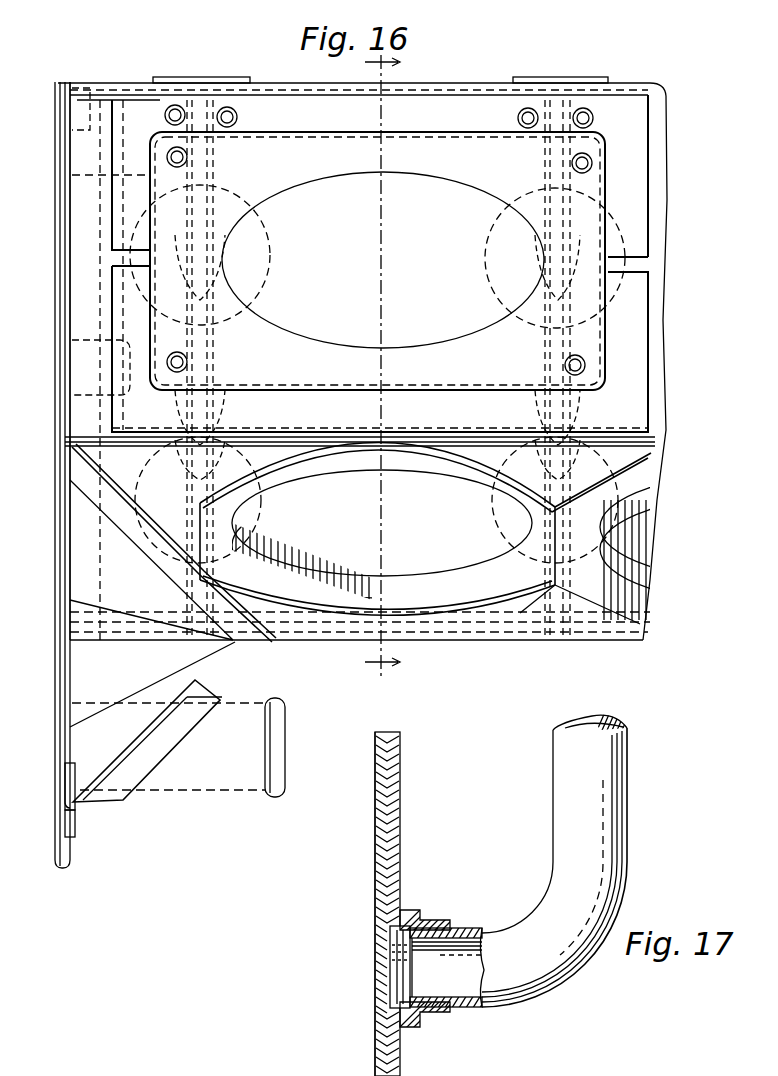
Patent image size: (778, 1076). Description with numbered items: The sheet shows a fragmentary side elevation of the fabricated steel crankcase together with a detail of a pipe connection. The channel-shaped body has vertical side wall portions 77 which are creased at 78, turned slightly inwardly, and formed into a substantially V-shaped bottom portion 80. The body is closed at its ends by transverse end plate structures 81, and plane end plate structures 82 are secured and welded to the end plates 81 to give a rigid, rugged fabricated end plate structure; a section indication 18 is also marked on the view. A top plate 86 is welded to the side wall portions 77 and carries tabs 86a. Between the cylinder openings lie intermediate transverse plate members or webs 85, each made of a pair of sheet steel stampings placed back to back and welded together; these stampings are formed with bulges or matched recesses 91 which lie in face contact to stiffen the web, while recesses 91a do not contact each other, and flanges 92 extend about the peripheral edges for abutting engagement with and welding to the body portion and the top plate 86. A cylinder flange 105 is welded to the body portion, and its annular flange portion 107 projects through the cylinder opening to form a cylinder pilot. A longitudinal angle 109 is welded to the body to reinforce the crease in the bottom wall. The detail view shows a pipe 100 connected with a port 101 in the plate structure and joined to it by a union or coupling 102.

In FIG. 16, the section line 18 is at (367, 369).
In FIG. 16, the vertical side wall portion 77 is at (658, 373).
In FIG. 16, the crease 78 is at (658, 440).
In FIG. 16, the V-shaped bottom portion 80 is at (590, 642).
In FIG. 16, the transverse end plate structure 81 is at (55, 553).
In FIG. 17, the transverse end plate structure 81 is at (400, 852).
In FIG. 16, the plane end plate structure 82 is at (50, 393).
In FIG. 17, the plane end plate structure 82 is at (365, 855).
In FIG. 16, the intermediate transverse plate member 85 is at (575, 200).
In FIG. 16, the top plate 86 is at (637, 83).
In FIG. 16, the mounting tab 86a is at (200, 77).
In FIG. 16, the bulge or matched recess 91 is at (553, 352).
In FIG. 16, the recess 91a is at (185, 145).
In FIG. 16, the flange 92 is at (250, 158).
In FIG. 16, the pipe 100 is at (72, 347).
In FIG. 17, the pipe 100 is at (605, 805).
In FIG. 17, the port 101 is at (376, 926).
In FIG. 16, the union or coupling 102 is at (72, 372).
In FIG. 17, the union or coupling 102 is at (420, 915).
In FIG. 16, the cylinder flange 105 is at (478, 447).
In FIG. 16, the annular flange portion 107 is at (413, 582).
In FIG. 16, the angle 109 is at (640, 612).